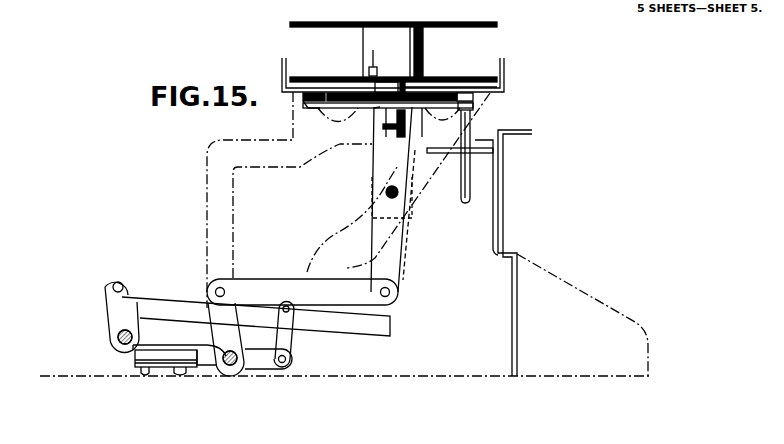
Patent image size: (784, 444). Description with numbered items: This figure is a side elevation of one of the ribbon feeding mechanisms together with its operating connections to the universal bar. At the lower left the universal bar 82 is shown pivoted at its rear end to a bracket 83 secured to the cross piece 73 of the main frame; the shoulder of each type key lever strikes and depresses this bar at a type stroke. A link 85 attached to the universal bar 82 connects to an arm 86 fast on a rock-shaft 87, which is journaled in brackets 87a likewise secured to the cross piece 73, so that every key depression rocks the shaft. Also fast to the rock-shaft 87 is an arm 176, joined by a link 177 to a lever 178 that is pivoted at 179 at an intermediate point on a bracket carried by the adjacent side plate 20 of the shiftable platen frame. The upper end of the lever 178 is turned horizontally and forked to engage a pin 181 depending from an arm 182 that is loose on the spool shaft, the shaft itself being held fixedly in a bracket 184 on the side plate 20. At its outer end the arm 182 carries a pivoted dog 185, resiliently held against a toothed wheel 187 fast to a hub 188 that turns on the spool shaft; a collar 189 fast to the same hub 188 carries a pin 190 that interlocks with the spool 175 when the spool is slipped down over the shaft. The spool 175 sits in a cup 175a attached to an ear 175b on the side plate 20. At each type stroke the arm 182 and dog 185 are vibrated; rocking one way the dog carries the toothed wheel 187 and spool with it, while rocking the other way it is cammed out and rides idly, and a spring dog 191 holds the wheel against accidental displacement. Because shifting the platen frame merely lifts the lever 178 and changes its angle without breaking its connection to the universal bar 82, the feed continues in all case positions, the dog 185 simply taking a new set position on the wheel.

The side plate 20 is at (294, 120).
The cross piece 73 is at (172, 368).
The universal bar 82 is at (346, 328).
The bracket 83 is at (110, 320).
The link 85 is at (292, 347).
The arm 86 is at (262, 366).
The rock-shaft 87 is at (230, 366).
The bracket 87a is at (203, 356).
The spool 175 is at (423, 55).
The cup 175a is at (505, 78).
The ear 175b is at (492, 95).
The arm 176 is at (221, 337).
The link 177 is at (281, 274).
The lever 178 is at (400, 262).
The pivot 179 is at (398, 194).
The pin 181 is at (405, 130).
The arm 182 is at (380, 108).
The bracket 184 is at (373, 160).
The dog 185 is at (367, 94).
The toothed wheel 187 is at (352, 96).
The hub 188 is at (430, 85).
The collar 189 is at (395, 78).
The pin 190 is at (388, 55).
The spring dog 191 is at (327, 104).